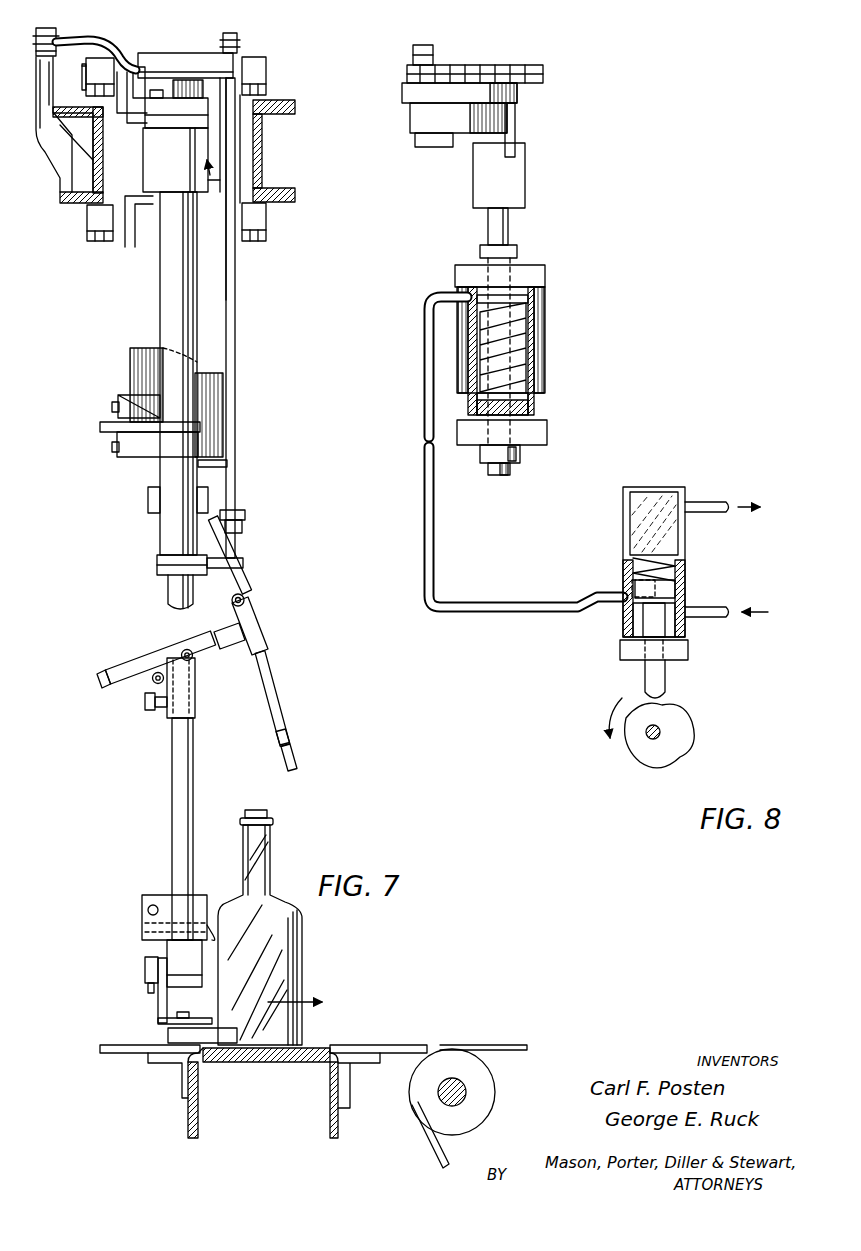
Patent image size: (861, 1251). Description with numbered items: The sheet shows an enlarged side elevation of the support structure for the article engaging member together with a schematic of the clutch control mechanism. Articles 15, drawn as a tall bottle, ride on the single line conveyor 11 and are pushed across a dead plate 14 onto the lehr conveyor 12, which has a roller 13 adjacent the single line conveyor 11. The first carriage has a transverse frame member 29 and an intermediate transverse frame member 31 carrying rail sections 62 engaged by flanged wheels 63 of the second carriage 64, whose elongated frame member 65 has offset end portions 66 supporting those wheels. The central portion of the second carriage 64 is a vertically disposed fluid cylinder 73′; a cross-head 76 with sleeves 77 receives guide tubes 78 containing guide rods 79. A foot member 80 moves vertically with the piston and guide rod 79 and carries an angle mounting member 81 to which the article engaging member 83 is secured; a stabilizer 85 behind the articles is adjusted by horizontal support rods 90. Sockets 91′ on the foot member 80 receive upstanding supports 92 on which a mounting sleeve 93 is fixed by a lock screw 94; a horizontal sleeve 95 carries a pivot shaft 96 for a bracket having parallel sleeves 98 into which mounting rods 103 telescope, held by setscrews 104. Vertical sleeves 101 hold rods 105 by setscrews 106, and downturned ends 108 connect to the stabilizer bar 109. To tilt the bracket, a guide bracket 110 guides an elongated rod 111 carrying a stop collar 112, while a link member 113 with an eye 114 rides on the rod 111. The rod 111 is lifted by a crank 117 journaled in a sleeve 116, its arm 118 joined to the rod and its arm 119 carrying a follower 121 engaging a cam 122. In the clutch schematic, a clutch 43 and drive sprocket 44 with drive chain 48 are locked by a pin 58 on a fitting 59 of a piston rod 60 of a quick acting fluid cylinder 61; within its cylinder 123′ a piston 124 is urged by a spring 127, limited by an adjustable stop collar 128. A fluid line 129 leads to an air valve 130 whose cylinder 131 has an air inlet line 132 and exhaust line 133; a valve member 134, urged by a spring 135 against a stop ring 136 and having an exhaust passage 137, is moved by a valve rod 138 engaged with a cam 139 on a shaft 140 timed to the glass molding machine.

In FIG. 7, the single line conveyor 11 is at (325, 1048).
In FIG. 7, the lehr conveyor 12 is at (485, 1045).
In FIG. 7, the roller 13 is at (490, 1086).
In FIG. 7, the dead plate 14 is at (412, 1045).
In FIG. 7, the article 15 is at (302, 955).
In FIG. 7, the transverse frame member 29 is at (130, 180).
In FIG. 7, the intermediate transverse frame member 31 is at (262, 140).
In FIG. 8, the clutch 43 is at (460, 125).
In FIG. 8, the drive sprocket 44 is at (526, 65).
In FIG. 8, the drive chain 48 is at (410, 68).
In FIG. 8, the pin 58 is at (515, 125).
In FIG. 8, the mounting fitting 59 is at (518, 182).
In FIG. 8, the piston rod 60 is at (496, 476).
In FIG. 8, the quick acting fluid cylinder 61 is at (551, 333).
In FIG. 7, the rail section 62 is at (282, 100).
In FIG. 7, the flanged wheel 63 is at (100, 58).
In FIG. 7, the second carriage 64 is at (222, 180).
In FIG. 7, the elongated frame member 65 is at (147, 128).
In FIG. 7, the end portion 66 is at (122, 102).
In FIG. 7, the fluid cylinder 73′ is at (128, 367).
In FIG. 7, the cross-head 76 is at (128, 450).
In FIG. 7, the sleeve 77 is at (173, 450).
In FIG. 7, the tube 78 is at (160, 298).
In FIG. 7, the guide rod 79 is at (168, 598).
In FIG. 7, the foot member 80 is at (202, 950).
In FIG. 7, the angle mounting member 81 is at (158, 1005).
In FIG. 7, the article engaging member 83 is at (168, 1036).
In FIG. 7, the stabilizer 85 is at (213, 937).
In FIG. 7, the horizontal support rod 90 is at (200, 927).
In FIG. 7, the upstanding socket 91′ is at (178, 977).
In FIG. 7, the upstanding support 92 is at (193, 786).
In FIG. 7, the mounting sleeve 93 is at (195, 708).
In FIG. 7, the lock screw 94 is at (152, 712).
In FIG. 7, the horizontal sleeve 95 is at (153, 681).
In FIG. 7, the pivot shaft 96 is at (147, 702).
In FIG. 7, the elongated sleeve 98 is at (135, 665).
In FIG. 7, the vertically disposed sleeve 101 is at (262, 620).
In FIG. 7, the mounting rod 103 is at (98, 677).
In FIG. 7, the setscrew 104 is at (183, 652).
In FIG. 7, the rod 105 is at (270, 665).
In FIG. 7, the setscrew 106 is at (245, 597).
In FIG. 7, the downturned end 108 is at (290, 735).
In FIG. 7, the stabilizer bar 109 is at (298, 760).
In FIG. 7, the guide bracket 110 is at (157, 562).
In FIG. 7, the elongated rod 111 is at (236, 325).
In FIG. 7, the stop collar 112 is at (242, 527).
In FIG. 7, the link member 113 is at (238, 650).
In FIG. 7, the eye 114 is at (246, 514).
In FIG. 7, the sleeve 116 is at (193, 53).
In FIG. 7, the crank 117 is at (145, 70).
In FIG. 7, the arm 118 is at (240, 33).
In FIG. 7, the arm 119 is at (86, 37).
In FIG. 7, the follower 121 is at (43, 28).
In FIG. 7, the cam 122 is at (42, 190).
In FIG. 8, the cylinder 123′ is at (534, 405).
In FIG. 8, the piston 124 is at (525, 308).
In FIG. 8, the spring 127 is at (528, 372).
In FIG. 8, the adjustable stop collar 128 is at (522, 455).
In FIG. 8, the fluid line 129 is at (435, 545).
In FIG. 8, the air valve 130 is at (690, 573).
In FIG. 8, the cylinder 131 is at (630, 540).
In FIG. 8, the air inlet line 132 is at (715, 618).
In FIG. 8, the exhaust line 133 is at (704, 501).
In FIG. 8, the valve member 134 is at (672, 590).
In FIG. 8, the spring 135 is at (665, 565).
In FIG. 8, the stop ring 136 is at (637, 610).
In FIG. 8, the exhaust passage 137 is at (632, 588).
In FIG. 8, the valve rod 138 is at (662, 672).
In FIG. 8, the cam 139 is at (690, 750).
In FIG. 8, the shaft 140 is at (650, 738).